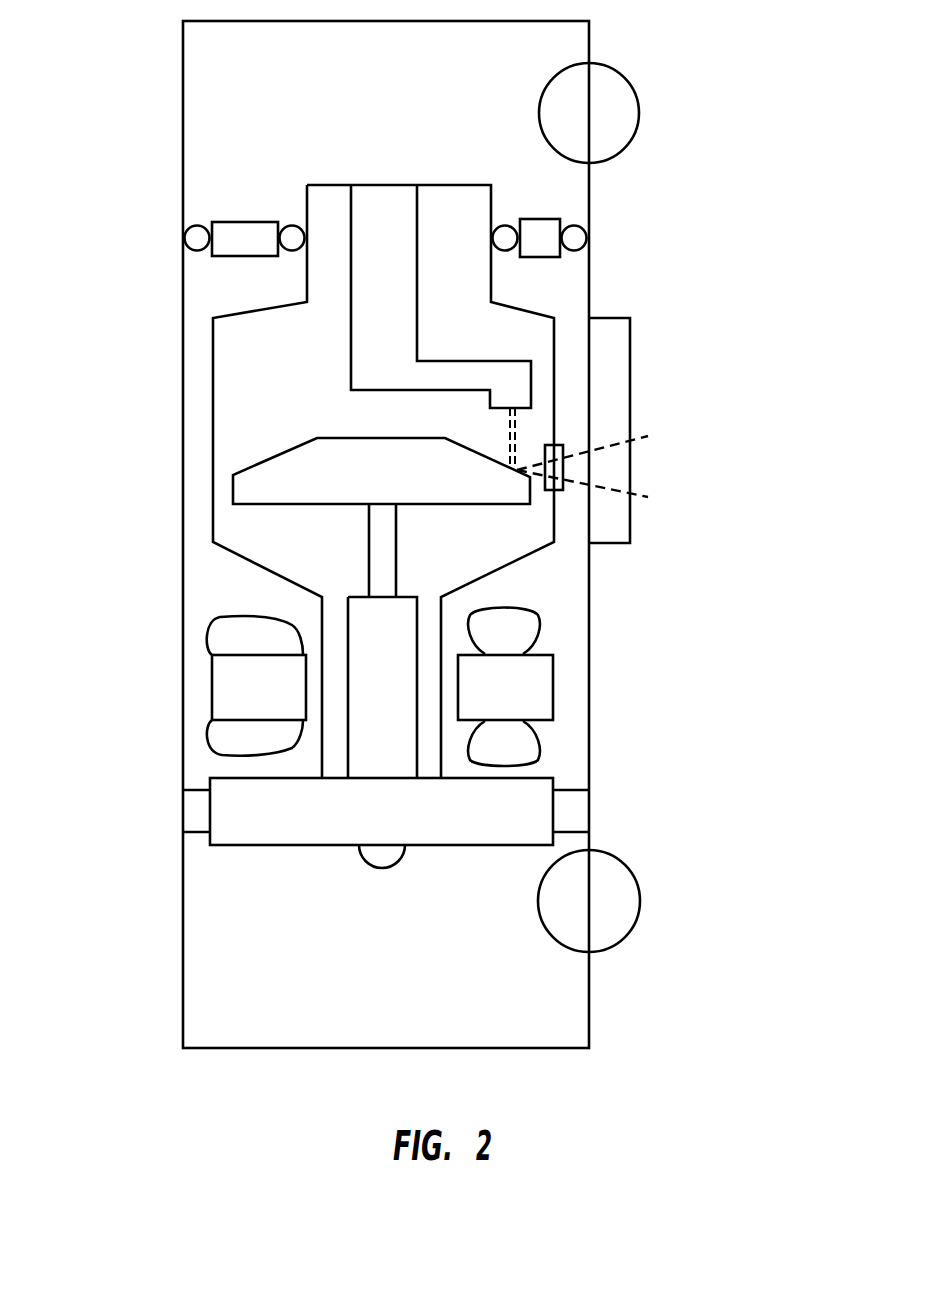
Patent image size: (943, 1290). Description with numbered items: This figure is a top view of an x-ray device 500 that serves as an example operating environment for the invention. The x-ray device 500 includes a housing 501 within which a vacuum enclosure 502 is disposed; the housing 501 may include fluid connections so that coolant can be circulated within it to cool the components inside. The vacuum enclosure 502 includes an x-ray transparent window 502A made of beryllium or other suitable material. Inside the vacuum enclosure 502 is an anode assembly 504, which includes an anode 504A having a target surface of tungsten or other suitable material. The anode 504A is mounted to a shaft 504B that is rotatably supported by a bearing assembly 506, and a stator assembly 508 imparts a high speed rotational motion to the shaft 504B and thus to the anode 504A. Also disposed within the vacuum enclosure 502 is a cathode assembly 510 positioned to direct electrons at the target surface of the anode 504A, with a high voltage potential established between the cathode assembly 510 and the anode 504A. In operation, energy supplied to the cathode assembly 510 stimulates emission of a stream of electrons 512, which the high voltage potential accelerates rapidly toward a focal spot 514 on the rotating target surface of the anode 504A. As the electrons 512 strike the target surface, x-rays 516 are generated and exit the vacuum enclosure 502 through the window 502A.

The x-ray device 500 is at (742, 163).
The housing 501 is at (592, 207).
The vacuum enclosure 502 is at (213, 397).
The x-ray transparent window 502A is at (563, 492).
The anode assembly 504 is at (256, 430).
The anode 504A is at (233, 505).
The shaft 504B is at (363, 565).
The bearing assembly 506 is at (338, 667).
The stator assembly 508 is at (553, 680).
The cathode assembly 510 is at (531, 368).
The stream of electrons 512 is at (515, 430).
The focal spot 514 is at (563, 467).
The x-rays 516 is at (652, 502).